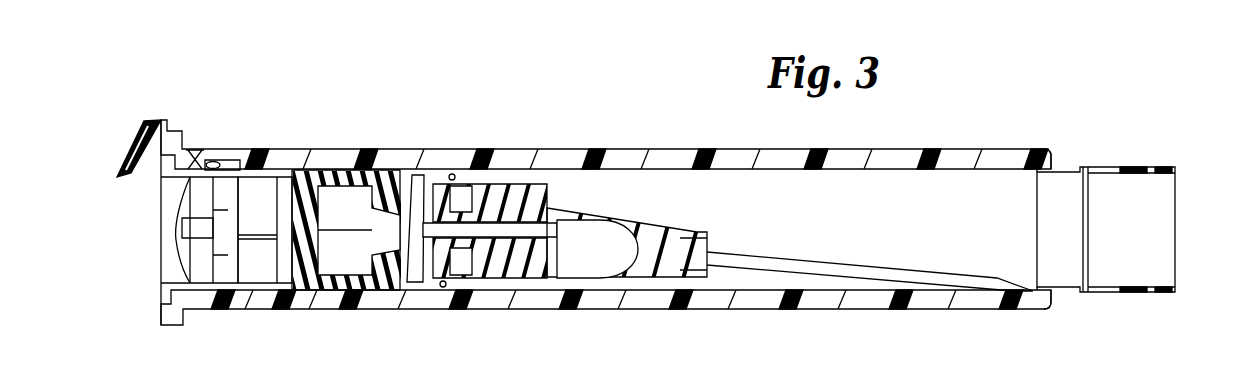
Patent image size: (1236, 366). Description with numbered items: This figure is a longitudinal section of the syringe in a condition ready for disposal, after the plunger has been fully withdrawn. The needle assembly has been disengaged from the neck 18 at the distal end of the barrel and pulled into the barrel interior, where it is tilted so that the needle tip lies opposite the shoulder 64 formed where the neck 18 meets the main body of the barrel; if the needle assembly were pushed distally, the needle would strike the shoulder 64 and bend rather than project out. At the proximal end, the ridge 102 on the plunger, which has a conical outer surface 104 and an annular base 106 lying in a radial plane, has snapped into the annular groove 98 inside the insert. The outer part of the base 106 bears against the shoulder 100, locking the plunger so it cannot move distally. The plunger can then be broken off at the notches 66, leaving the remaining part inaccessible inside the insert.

The neck 18 is at (1120, 167).
The shoulder 64 is at (1037, 192).
The notches 66 is at (187, 263).
The annular groove 98 is at (193, 172).
The shoulder 100 is at (208, 168).
The ridge 102 is at (227, 255).
The conical outer surface 104 is at (247, 192).
The annular base 106 is at (227, 212).